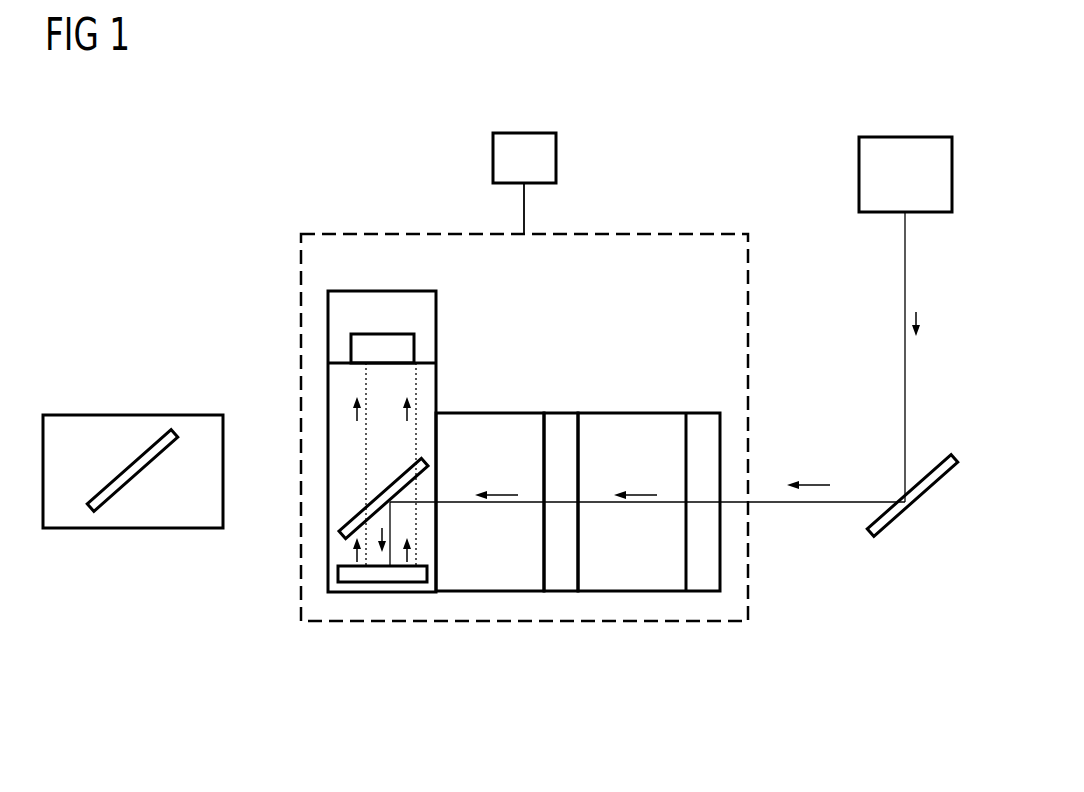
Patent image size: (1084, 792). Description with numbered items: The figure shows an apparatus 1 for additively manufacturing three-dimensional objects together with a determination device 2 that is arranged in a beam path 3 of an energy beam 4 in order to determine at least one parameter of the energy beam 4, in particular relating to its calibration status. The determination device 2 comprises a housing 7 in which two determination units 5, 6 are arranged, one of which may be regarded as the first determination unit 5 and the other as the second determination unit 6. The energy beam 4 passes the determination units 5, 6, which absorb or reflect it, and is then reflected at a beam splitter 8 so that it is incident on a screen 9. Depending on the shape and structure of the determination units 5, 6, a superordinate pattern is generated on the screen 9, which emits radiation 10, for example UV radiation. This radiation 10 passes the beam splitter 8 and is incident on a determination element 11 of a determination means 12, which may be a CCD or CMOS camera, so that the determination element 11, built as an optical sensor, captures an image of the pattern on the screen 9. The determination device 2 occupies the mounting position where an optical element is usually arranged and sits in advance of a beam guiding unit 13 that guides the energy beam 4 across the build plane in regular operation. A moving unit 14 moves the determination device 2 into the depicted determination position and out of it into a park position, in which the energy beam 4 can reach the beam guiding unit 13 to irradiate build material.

The apparatus 1 is at (214, 210).
The determination device 2 is at (439, 660).
The beam path 3 is at (818, 485).
The energy beam 4 is at (905, 338).
The first determination unit 5 is at (702, 420).
The second determination unit 6 is at (557, 420).
The housing 7 is at (485, 411).
The beam splitter 8 is at (342, 528).
The screen 9 is at (365, 573).
The radiation 10 is at (365, 462).
The determination element 11 is at (363, 343).
The determination means 12 is at (369, 274).
The beam guiding unit 13 is at (110, 385).
The moving unit 14 is at (519, 133).